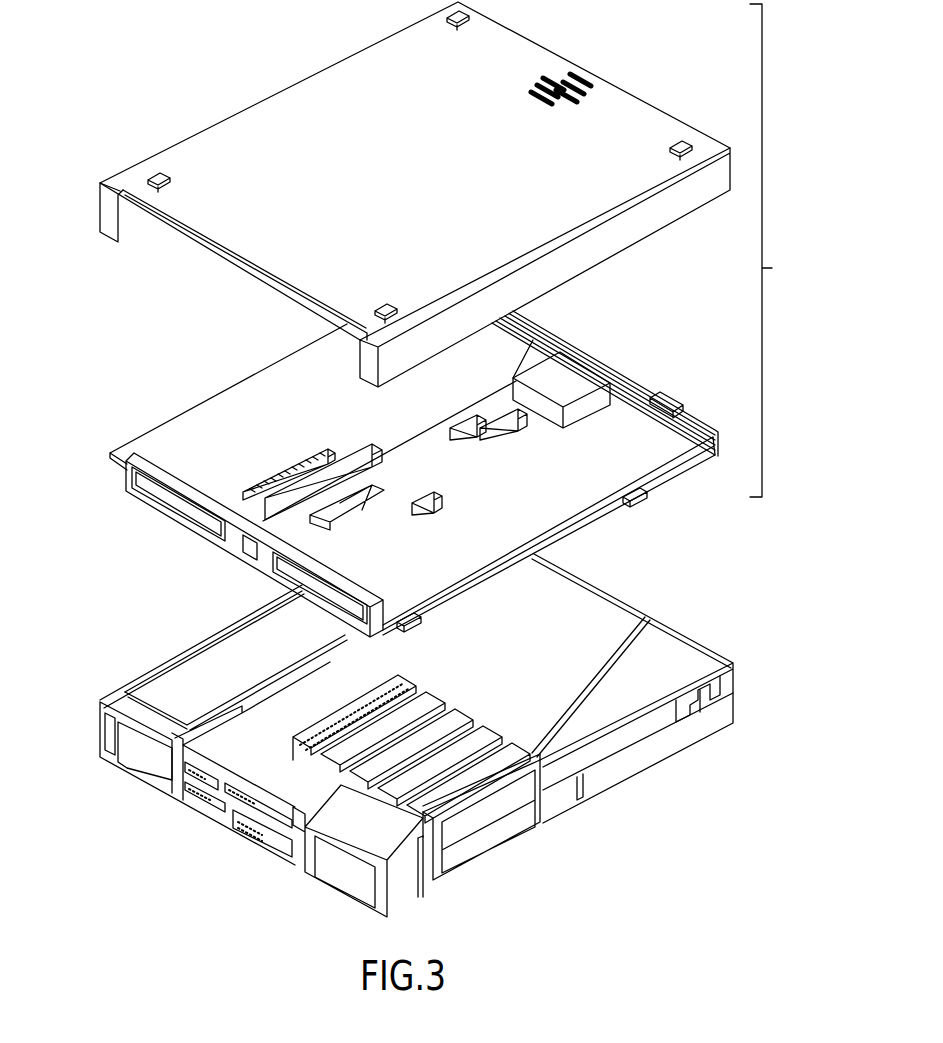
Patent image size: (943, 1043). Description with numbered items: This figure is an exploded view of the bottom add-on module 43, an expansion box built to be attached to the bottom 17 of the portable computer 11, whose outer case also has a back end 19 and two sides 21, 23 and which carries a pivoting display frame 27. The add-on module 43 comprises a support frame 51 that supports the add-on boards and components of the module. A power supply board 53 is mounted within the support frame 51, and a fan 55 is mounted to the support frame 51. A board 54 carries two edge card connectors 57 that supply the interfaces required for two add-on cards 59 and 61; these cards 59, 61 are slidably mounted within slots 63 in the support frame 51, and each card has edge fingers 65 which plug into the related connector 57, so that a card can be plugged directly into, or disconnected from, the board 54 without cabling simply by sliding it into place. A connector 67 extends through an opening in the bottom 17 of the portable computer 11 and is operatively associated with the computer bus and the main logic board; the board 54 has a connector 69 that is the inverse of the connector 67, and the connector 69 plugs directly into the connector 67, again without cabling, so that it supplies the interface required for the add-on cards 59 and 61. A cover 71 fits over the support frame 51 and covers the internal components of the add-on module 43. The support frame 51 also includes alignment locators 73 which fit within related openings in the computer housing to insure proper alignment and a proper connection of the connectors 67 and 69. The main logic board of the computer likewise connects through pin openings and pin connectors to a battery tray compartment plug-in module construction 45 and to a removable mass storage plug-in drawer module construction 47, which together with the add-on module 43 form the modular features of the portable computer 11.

The portable computer 11 is at (760, 615).
The bottom 17 is at (590, 594).
The back end 19 is at (317, 870).
The side 21 is at (170, 661).
The side 23 is at (735, 675).
The display frame 27 is at (648, 768).
The add-on module 43 is at (777, 250).
The battery tray compartment plug-in module construction 45 is at (120, 770).
The plug-in drawer module construction 47 is at (455, 700).
The support frame 51 is at (229, 551).
The power supply board 53 is at (500, 460).
The board 54 is at (415, 495).
The fan 55 is at (590, 372).
The edge card connector 57 is at (370, 455).
The add-on card 59 is at (233, 388).
The add-on card 61 is at (668, 460).
The slot 63 is at (548, 343).
The edge fingers 65 is at (316, 455).
The connector 67 is at (407, 687).
The connector 69 is at (370, 490).
The cover 71 is at (362, 50).
The alignment locator 73 is at (645, 505).